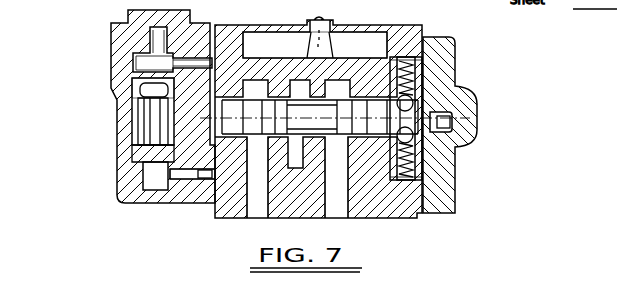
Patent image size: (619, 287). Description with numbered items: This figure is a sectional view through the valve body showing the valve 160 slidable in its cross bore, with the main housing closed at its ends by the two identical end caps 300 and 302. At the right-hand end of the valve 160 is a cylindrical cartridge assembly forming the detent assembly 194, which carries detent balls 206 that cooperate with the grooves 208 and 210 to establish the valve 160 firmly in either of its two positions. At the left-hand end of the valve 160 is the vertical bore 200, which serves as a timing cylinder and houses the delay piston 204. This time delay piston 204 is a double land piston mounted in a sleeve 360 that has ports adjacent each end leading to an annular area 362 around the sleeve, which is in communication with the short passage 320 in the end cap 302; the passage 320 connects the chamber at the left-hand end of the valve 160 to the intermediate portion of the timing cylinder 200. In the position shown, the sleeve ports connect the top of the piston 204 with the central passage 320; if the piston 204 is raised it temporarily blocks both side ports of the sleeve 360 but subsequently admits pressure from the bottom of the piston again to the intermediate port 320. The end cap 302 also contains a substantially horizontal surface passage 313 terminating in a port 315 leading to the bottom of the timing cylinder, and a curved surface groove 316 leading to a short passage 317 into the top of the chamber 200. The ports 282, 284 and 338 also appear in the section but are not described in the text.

The valve 160 is at (320, 115).
The detent assembly 194 is at (420, 60).
The vertical bore 200 is at (137, 97).
The delay piston 204 is at (153, 116).
The detent balls 206 is at (418, 96).
The groove 208 is at (423, 113).
The groove 210 is at (452, 124).
The port 282 is at (338, 212).
The port 284 is at (260, 208).
The end cap 300 is at (452, 215).
The end cap 302 is at (117, 170).
The surface passage 313 is at (203, 179).
The port 315 is at (182, 173).
The curved surface groove 316 is at (132, 61).
The short passage 317 is at (200, 57).
The short passage 320 is at (244, 43).
The port 338 is at (312, 27).
The sleeve 360 is at (132, 150).
The annular area 362 is at (152, 113).